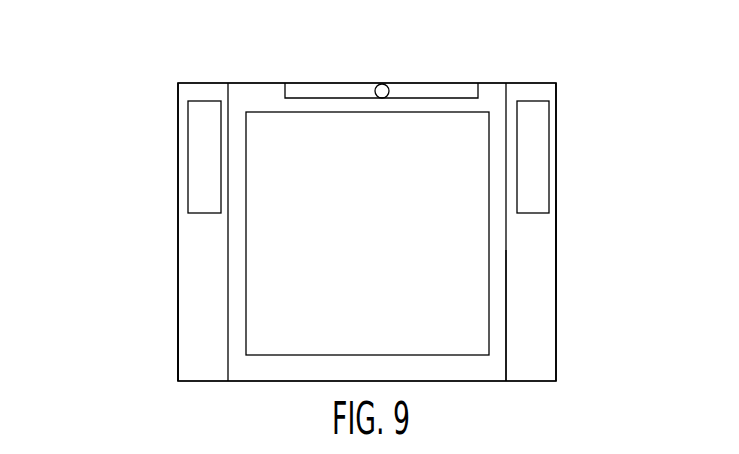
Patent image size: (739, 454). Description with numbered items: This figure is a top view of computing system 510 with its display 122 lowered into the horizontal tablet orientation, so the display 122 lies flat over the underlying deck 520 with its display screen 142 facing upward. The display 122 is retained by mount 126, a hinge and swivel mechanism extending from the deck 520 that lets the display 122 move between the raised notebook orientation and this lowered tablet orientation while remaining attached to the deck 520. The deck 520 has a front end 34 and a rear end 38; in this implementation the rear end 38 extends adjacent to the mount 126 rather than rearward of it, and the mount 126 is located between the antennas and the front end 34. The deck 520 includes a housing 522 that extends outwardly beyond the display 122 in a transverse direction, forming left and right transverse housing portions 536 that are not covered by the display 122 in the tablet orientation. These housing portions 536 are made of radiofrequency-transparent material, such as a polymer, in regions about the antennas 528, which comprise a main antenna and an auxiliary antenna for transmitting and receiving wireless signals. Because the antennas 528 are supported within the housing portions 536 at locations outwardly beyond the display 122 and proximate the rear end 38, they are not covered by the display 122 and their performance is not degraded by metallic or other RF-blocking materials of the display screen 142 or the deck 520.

The front end 34 is at (561, 384).
The rear end 38 is at (292, 80).
The display 122 is at (506, 302).
The mount 126 is at (448, 82).
The display screen 142 is at (384, 240).
The computing system 510 is at (96, 134).
The deck 520 is at (559, 247).
The housing 522 is at (178, 282).
The antennas 528 is at (188, 184).
The transverse housing portions 536 is at (178, 340).